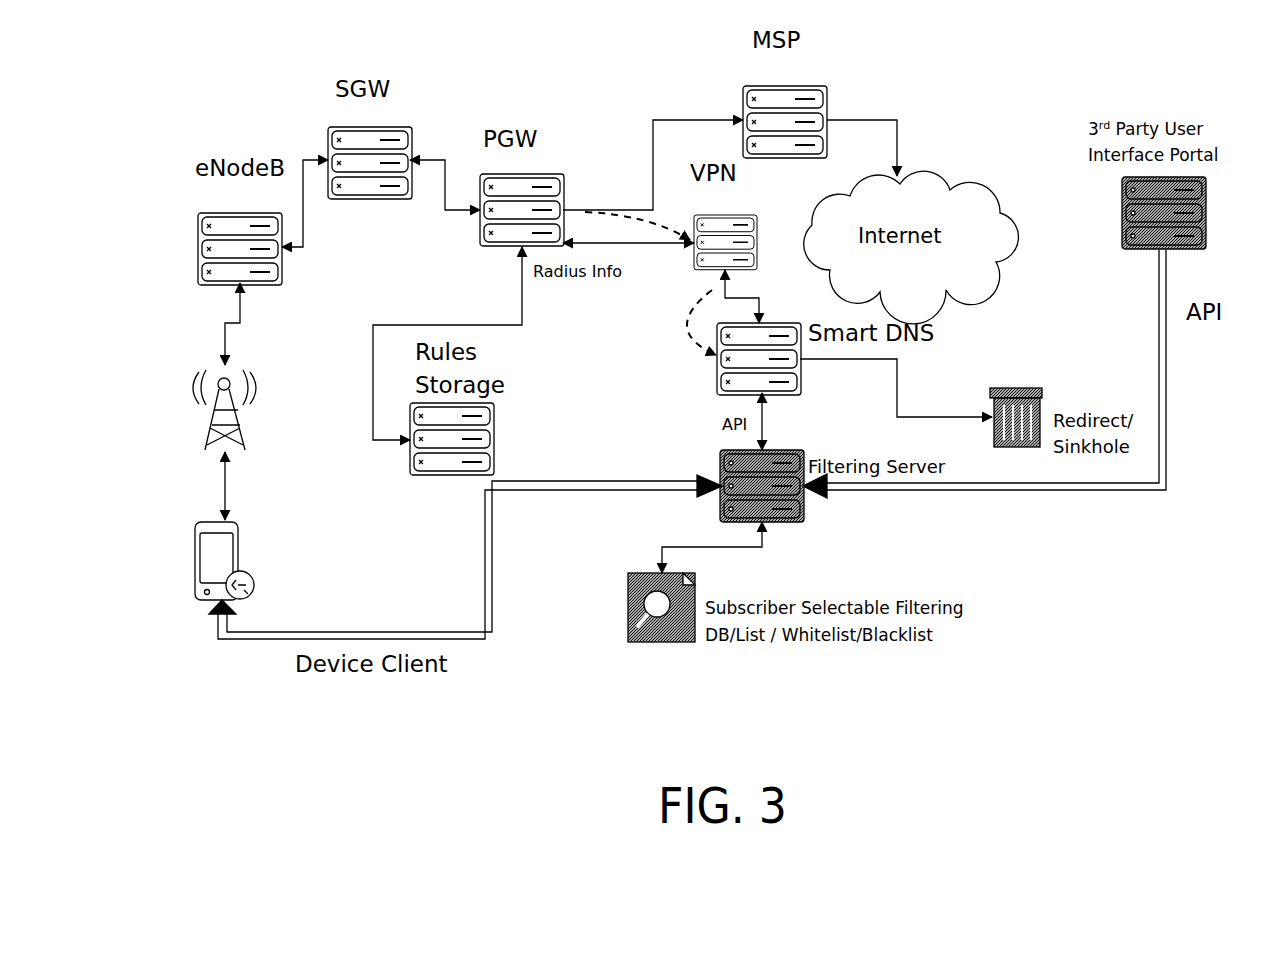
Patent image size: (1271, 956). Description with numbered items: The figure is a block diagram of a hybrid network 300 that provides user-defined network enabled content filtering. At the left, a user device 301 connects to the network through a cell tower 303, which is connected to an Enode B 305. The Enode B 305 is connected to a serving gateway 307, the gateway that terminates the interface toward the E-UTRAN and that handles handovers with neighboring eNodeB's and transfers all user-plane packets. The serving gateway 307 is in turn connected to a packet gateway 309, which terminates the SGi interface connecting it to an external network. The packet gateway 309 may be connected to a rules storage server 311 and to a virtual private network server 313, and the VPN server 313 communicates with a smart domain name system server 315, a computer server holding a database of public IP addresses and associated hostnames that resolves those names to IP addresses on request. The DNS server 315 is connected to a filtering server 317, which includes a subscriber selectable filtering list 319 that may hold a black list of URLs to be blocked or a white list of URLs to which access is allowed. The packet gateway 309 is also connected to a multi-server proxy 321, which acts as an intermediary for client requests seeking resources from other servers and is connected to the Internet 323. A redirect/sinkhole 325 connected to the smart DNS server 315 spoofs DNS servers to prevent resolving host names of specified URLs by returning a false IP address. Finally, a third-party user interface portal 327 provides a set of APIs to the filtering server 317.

The hybrid network 300 is at (497, 52).
The user device 301 is at (236, 545).
The cell tower 303 is at (235, 422).
The Enode B 305 is at (240, 212).
The serving gateway 307 is at (368, 127).
The packet gateway 309 is at (522, 173).
The rules storage server 311 is at (493, 437).
The virtual private network server 313 is at (727, 214).
The smart domain name system server 315 is at (780, 322).
The filtering server 317 is at (780, 449).
The subscriber selectable filtering list 319 is at (662, 643).
The multi-server proxy 321 is at (787, 86).
The Internet 323 is at (905, 180).
The redirect/sinkhole 325 is at (1013, 388).
The third-party user interface portal 327 is at (1122, 215).